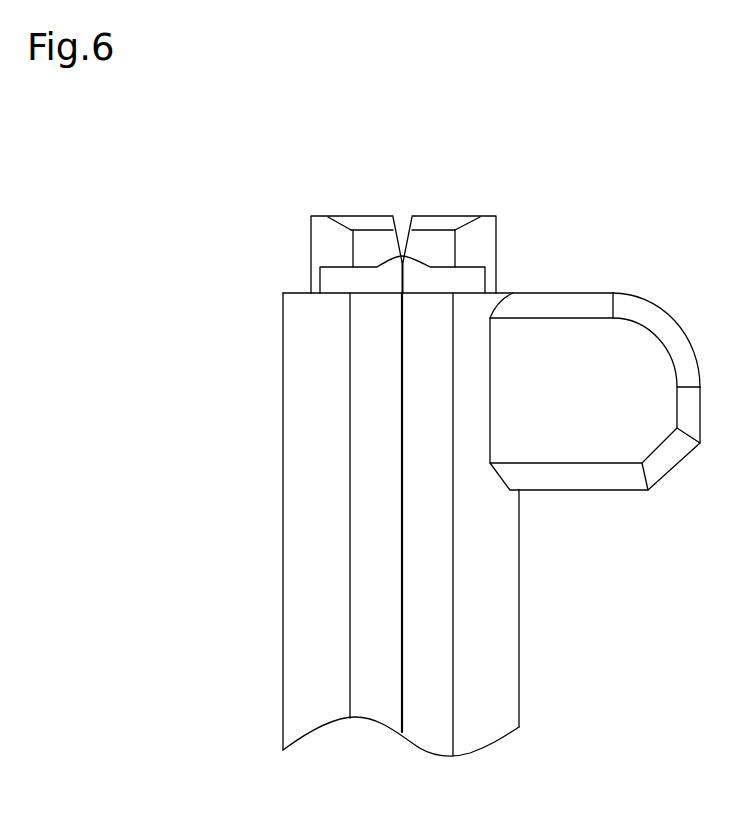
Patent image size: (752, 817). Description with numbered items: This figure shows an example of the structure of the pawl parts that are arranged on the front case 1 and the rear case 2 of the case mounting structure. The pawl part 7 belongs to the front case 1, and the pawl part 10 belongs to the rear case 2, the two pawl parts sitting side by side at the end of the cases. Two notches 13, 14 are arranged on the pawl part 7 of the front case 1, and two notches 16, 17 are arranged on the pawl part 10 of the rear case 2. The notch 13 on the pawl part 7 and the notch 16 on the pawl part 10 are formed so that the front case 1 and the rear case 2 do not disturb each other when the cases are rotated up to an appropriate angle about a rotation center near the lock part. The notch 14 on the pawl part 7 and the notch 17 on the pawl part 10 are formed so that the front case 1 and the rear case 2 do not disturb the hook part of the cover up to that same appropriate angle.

The front case 1 is at (508, 572).
The rear case 2 is at (292, 570).
The pawl part 7 is at (493, 277).
The pawl part 10 is at (311, 276).
The notch 13 is at (413, 218).
The notch 14 is at (420, 258).
The notch 16 is at (393, 218).
The notch 17 is at (388, 260).